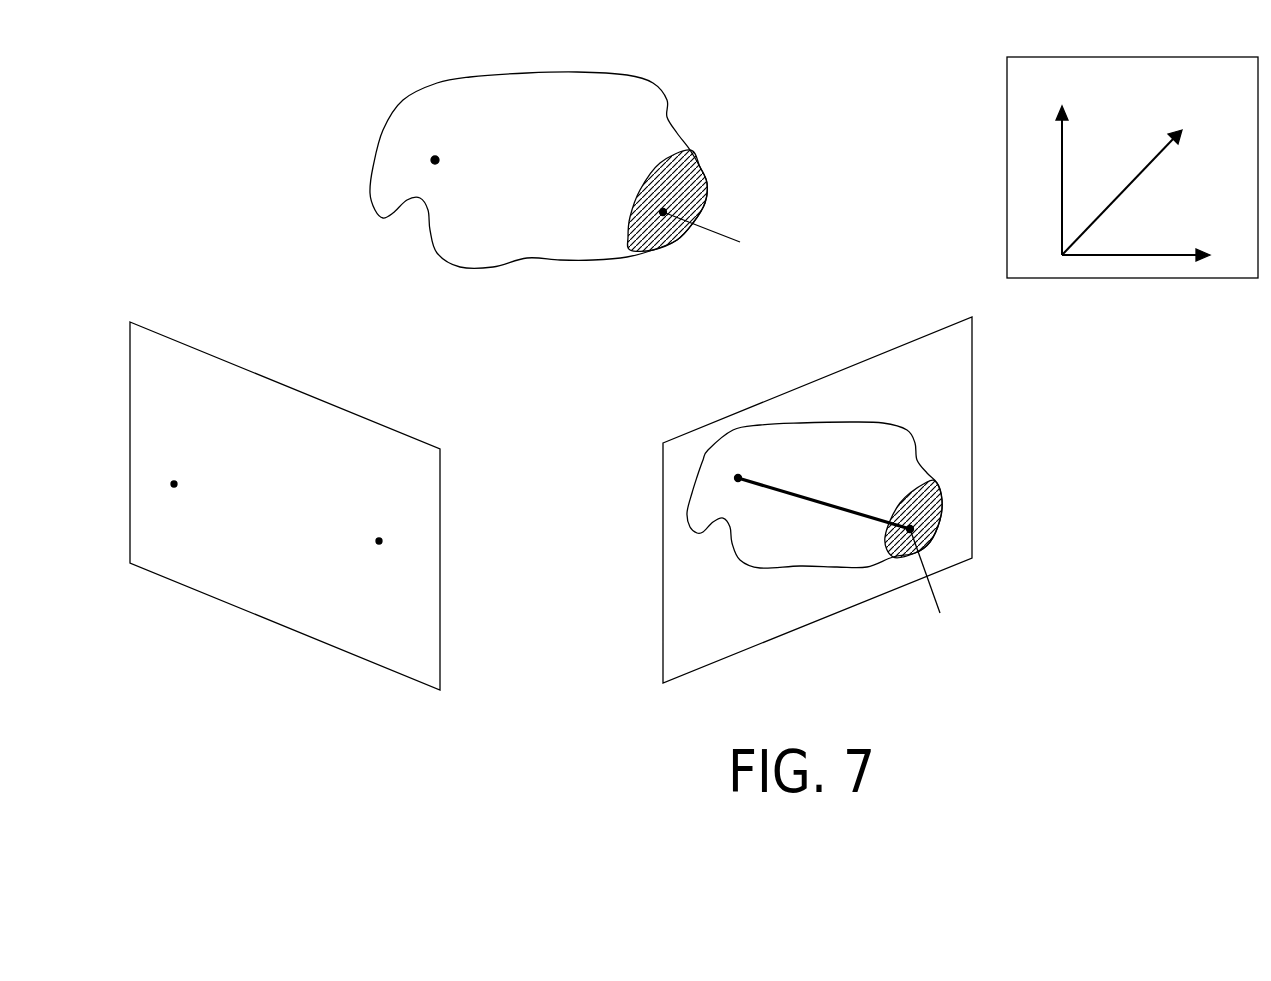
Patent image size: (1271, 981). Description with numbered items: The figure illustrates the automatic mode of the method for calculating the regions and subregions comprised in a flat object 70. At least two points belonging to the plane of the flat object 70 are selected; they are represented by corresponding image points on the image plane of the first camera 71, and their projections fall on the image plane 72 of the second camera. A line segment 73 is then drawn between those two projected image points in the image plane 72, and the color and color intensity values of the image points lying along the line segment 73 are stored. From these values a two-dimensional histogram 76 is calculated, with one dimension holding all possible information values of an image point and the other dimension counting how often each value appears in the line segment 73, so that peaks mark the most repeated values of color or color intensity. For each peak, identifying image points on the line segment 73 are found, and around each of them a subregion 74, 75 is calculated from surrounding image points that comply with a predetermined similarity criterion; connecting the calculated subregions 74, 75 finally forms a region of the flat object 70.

The flat object 70 is at (690, 150).
The image plane of the first camera 71 is at (195, 347).
The image plane of the second camera 72 is at (917, 338).
The line segment 73 is at (793, 493).
The subregion 74 is at (917, 503).
The subregion 75 is at (782, 548).
The two-dimensional histogram 76 is at (1007, 118).